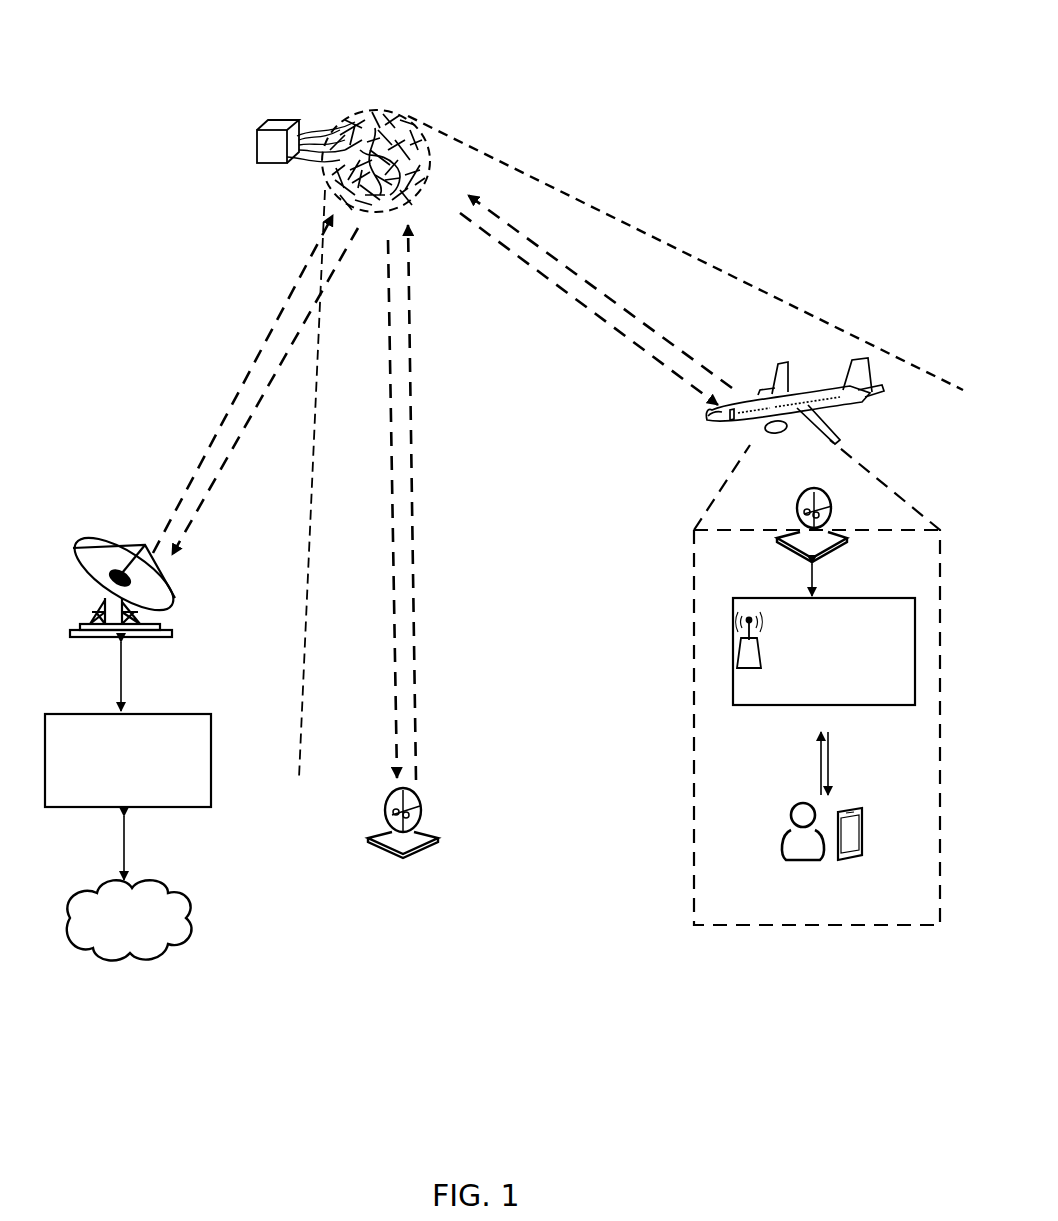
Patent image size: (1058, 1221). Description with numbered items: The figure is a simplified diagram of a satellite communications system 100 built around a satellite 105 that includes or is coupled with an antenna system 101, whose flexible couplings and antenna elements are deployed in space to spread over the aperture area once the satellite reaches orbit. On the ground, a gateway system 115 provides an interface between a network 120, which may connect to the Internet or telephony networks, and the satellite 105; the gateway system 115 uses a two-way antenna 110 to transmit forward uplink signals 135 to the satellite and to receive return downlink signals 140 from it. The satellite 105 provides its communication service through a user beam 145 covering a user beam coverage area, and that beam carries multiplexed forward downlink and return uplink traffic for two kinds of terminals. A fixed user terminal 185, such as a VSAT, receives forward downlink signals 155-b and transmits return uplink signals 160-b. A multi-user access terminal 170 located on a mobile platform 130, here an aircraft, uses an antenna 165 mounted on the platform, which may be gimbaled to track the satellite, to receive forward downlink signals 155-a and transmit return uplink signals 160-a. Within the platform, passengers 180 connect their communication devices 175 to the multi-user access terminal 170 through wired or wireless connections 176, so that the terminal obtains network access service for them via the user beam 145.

The satellite communications system 100 is at (742, 1162).
The antenna system 101 is at (396, 113).
The satellite 105 is at (264, 124).
The antenna 110 is at (175, 604).
The gateway system 115 is at (212, 752).
The network 120 is at (118, 965).
The mobile platform 130 is at (862, 355).
The forward uplink signals 135 is at (228, 414).
The return downlink signals 140 is at (224, 462).
The user beam 145 is at (612, 220).
The forward downlink signals 155-a is at (612, 328).
The forward downlink signals 155-b is at (388, 646).
The return uplink signals 160-a is at (624, 312).
The return uplink signals 160-b is at (416, 618).
The antenna 165 is at (832, 510).
The multi-user access terminal 170 is at (762, 597).
The communication devices 175 is at (856, 860).
The connections 176 is at (815, 760).
The passengers 180 is at (802, 862).
The user terminal 185 is at (440, 836).